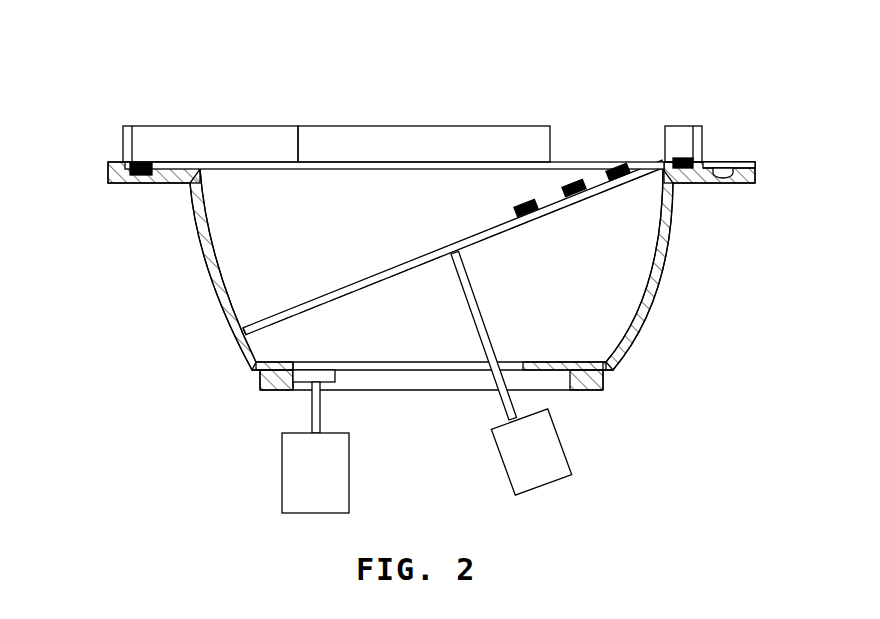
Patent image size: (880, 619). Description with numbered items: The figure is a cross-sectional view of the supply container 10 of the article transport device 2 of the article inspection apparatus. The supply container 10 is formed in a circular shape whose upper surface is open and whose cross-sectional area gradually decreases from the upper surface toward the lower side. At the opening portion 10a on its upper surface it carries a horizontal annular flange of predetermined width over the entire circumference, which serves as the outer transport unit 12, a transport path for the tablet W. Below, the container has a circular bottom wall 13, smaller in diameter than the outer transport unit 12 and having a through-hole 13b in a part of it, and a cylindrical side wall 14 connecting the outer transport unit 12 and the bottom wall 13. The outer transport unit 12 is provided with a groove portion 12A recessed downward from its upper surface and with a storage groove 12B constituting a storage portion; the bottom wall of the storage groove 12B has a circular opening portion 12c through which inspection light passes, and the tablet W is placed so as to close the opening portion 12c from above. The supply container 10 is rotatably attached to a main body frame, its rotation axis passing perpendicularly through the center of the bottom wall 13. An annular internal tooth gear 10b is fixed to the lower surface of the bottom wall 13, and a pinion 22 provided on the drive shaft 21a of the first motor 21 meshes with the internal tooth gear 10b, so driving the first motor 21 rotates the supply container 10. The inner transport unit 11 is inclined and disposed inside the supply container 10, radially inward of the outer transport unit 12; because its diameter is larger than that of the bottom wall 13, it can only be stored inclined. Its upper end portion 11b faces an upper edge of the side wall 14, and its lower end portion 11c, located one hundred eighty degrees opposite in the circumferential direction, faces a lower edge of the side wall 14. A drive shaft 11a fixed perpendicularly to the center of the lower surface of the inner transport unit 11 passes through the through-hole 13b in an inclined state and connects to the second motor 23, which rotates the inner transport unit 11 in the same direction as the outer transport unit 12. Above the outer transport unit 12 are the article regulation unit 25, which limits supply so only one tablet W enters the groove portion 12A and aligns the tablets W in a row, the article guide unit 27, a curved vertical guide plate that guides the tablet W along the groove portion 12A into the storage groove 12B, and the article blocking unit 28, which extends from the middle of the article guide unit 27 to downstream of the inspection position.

The article transport device 2 is at (526, 78).
The supply container 10 is at (656, 272).
The opening portion 10a is at (382, 165).
The internal tooth gear 10b is at (275, 388).
The inner transport unit 11 is at (363, 274).
The drive shaft 11a is at (482, 297).
The upper end portion 11b is at (660, 165).
The lower end portion 11c is at (240, 332).
The outer transport unit 12 is at (115, 160).
The groove portion 12A is at (185, 162).
The storage groove 12B is at (727, 163).
The opening portion 12c is at (723, 185).
The bottom wall 13 is at (300, 365).
The through-hole 13b is at (430, 372).
The side wall 14 is at (195, 236).
The first motor 21 is at (302, 512).
The drive shaft 21a is at (316, 418).
The pinion 22 is at (336, 380).
The second motor 23 is at (572, 452).
The article regulation unit 25 is at (700, 130).
The article guide unit 27 is at (472, 145).
The article blocking unit 28 is at (243, 145).
The tablet W is at (146, 160).